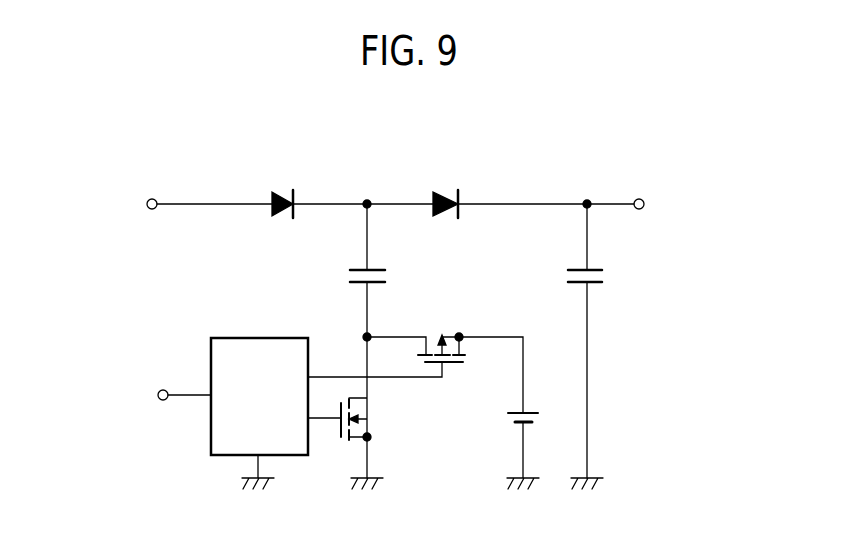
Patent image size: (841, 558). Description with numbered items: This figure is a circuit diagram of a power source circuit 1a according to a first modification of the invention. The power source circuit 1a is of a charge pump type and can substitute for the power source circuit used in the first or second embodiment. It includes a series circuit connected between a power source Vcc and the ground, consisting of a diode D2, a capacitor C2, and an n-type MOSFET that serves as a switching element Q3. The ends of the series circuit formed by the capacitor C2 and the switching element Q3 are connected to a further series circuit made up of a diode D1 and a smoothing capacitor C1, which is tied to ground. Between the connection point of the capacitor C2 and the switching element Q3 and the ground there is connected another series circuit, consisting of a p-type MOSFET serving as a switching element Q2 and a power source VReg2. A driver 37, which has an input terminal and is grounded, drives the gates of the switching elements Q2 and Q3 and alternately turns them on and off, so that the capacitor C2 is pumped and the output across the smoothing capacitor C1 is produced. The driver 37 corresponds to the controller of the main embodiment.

The power source circuit 1a is at (576, 166).
The driver 37 is at (273, 338).
The diode D1 is at (449, 187).
The diode D2 is at (288, 189).
The smoothing capacitor C1 is at (567, 346).
The capacitor C2 is at (349, 270).
The switching element Q2 is at (415, 357).
The switching element Q3 is at (359, 413).
The power source VReg2 is at (493, 451).
The power source Vcc is at (186, 203).